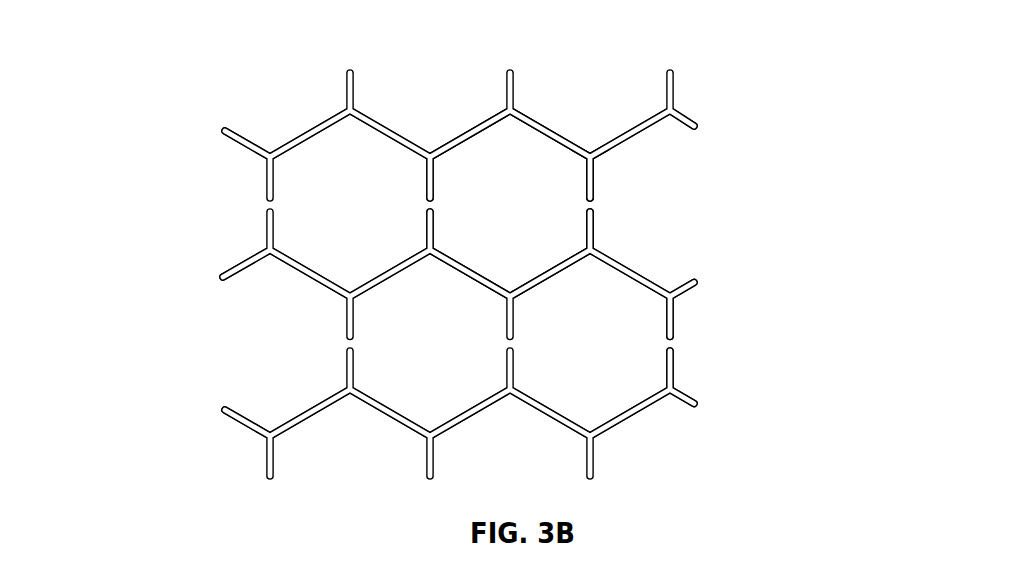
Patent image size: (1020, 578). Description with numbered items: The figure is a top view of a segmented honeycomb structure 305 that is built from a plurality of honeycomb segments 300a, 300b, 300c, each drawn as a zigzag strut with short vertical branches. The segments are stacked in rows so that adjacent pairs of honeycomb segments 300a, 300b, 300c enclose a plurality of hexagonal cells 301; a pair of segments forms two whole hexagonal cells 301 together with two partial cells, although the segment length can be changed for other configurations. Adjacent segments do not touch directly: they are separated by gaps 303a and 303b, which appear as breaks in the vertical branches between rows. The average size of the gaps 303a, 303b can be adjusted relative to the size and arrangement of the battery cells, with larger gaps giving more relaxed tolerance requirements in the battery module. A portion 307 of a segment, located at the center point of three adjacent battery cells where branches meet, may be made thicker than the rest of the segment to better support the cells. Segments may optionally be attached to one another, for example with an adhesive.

The hexagonal cell 301 is at (520, 168).
The segmented honeycomb structure 305 is at (834, 61).
The honeycomb segment 300a is at (695, 122).
The honeycomb segment 300b is at (694, 283).
The honeycomb segment 300c is at (693, 404).
The gap 303a is at (591, 206).
The gap 303b is at (672, 343).
The portion of the honeycomb segments 307 is at (594, 162).